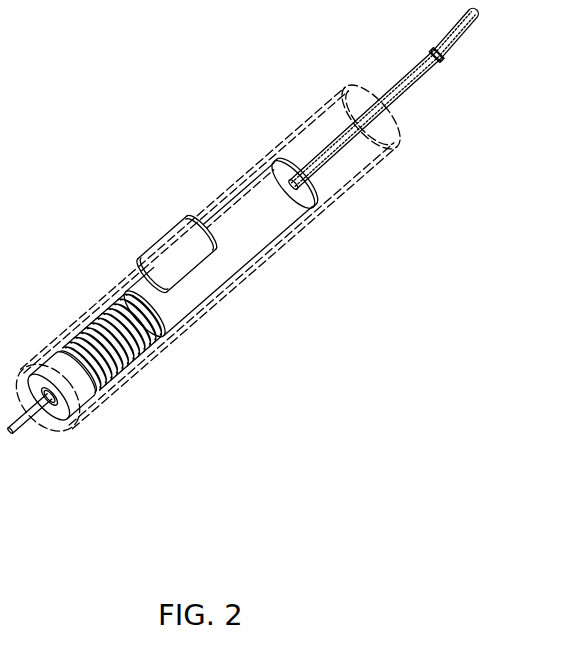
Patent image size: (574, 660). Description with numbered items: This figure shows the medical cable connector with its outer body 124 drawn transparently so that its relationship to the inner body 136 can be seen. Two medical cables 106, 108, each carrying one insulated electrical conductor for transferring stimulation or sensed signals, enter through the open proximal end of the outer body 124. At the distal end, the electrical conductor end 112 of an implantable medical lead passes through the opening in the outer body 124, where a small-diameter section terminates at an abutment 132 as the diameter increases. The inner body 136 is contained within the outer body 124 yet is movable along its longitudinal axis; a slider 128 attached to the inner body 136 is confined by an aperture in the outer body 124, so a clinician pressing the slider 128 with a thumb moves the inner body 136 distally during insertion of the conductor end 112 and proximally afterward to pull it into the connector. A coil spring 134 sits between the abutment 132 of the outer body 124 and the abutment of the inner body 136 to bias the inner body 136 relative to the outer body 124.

The medical cable 106 is at (411, 80).
The medical cable 108 is at (413, 94).
The electrical conductor end 112 is at (23, 438).
The outer body 124 is at (37, 362).
The slider 128 is at (171, 241).
The abutment 132 is at (43, 357).
The spring 134 is at (123, 383).
The inner body 136 is at (248, 245).